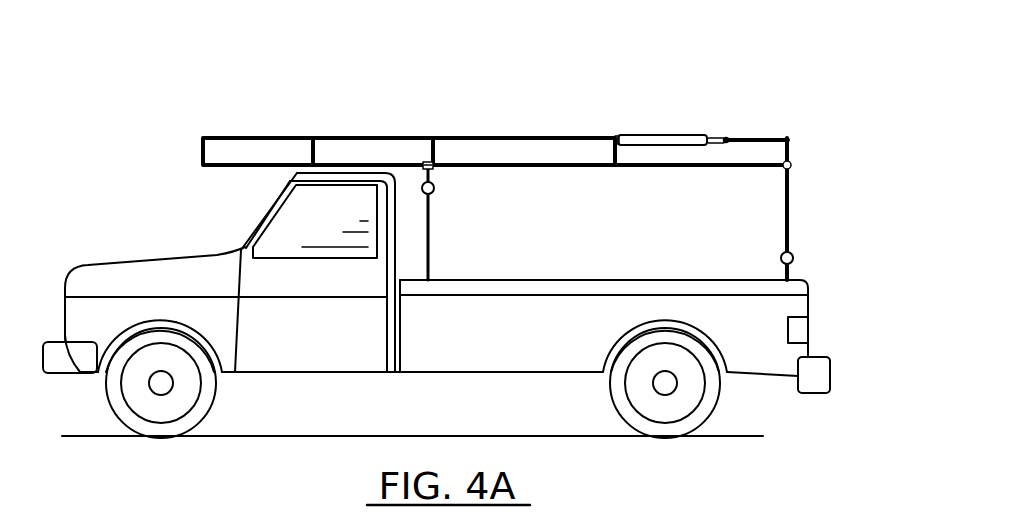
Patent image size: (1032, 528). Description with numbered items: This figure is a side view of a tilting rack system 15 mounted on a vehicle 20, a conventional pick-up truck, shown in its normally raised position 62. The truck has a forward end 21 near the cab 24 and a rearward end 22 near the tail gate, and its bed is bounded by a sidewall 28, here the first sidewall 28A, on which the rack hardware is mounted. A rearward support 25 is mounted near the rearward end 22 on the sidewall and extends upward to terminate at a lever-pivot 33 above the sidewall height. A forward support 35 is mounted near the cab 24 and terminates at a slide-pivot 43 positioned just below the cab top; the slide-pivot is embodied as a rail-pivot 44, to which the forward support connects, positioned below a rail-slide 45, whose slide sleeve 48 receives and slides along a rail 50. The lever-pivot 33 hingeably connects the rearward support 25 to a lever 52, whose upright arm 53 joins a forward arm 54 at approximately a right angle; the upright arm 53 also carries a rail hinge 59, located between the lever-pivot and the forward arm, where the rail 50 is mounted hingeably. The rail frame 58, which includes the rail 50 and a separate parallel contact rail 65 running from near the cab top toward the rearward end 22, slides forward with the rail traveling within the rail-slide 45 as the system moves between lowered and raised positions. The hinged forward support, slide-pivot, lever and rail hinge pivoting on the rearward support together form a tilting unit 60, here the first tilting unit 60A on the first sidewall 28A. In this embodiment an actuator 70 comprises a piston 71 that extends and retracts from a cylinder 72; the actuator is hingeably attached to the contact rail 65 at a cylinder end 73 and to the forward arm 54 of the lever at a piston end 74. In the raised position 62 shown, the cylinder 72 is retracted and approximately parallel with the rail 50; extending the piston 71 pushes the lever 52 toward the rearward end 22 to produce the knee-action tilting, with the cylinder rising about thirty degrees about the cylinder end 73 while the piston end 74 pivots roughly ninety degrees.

The tilting rack system 15 is at (559, 182).
The vehicle 20 is at (436, 305).
The forward end 21 is at (90, 360).
The rearward end 22 is at (788, 365).
The cab 24 is at (305, 348).
The rearward support 25 is at (781, 268).
The sidewall 28 is at (604, 334).
The first sidewall 28A is at (588, 315).
The lever-pivot 33 is at (781, 255).
The forward support 35 is at (419, 189).
The slide-pivot 43 is at (425, 157).
The rail-pivot 44 is at (433, 193).
The rail-slide 45 is at (432, 169).
The slide sleeve 48 is at (424, 163).
The rail 50 is at (547, 168).
The lever 52 is at (784, 181).
The upright arm 53 is at (790, 196).
The forward arm 54 is at (773, 138).
The rail frame 58 is at (531, 142).
The rail hinge 59 is at (793, 166).
The tilting unit 60 is at (826, 248).
The first tilting unit 60A is at (826, 227).
The raised position 62 is at (737, 110).
The contact rail 65 is at (523, 138).
The actuator 70 is at (674, 104).
The piston 71 is at (715, 136).
The cylinder 72 is at (695, 136).
The cylinder end 73 is at (618, 140).
The piston end 74 is at (726, 141).